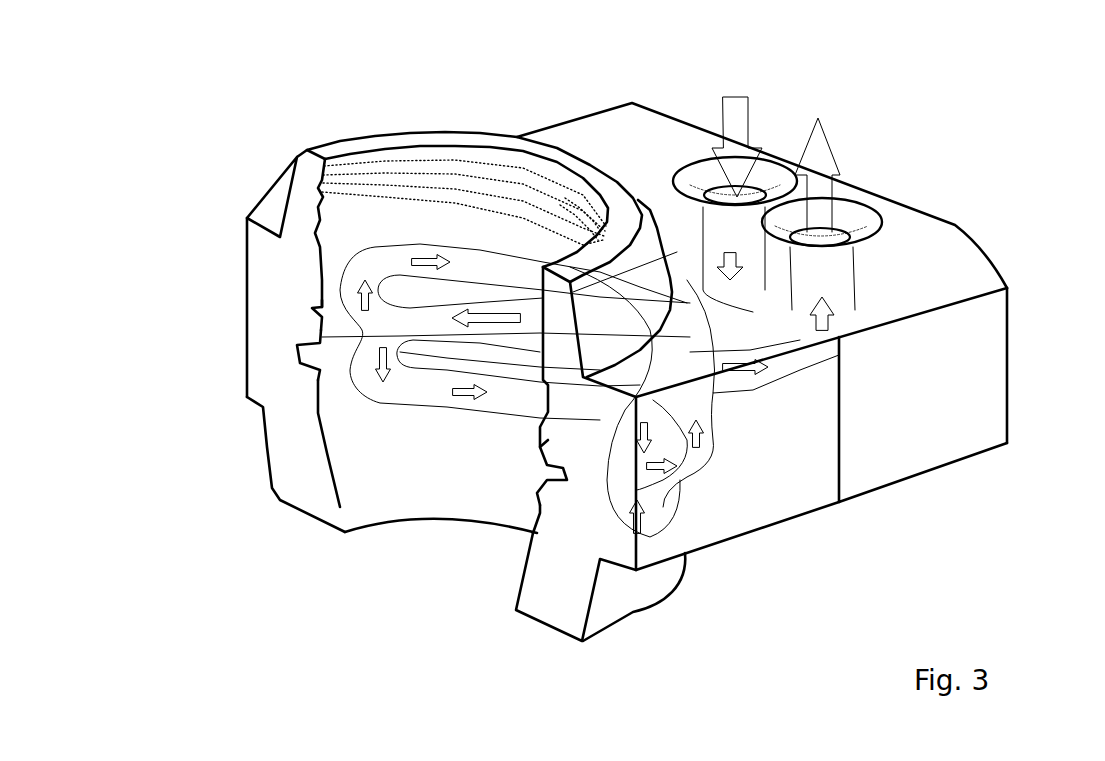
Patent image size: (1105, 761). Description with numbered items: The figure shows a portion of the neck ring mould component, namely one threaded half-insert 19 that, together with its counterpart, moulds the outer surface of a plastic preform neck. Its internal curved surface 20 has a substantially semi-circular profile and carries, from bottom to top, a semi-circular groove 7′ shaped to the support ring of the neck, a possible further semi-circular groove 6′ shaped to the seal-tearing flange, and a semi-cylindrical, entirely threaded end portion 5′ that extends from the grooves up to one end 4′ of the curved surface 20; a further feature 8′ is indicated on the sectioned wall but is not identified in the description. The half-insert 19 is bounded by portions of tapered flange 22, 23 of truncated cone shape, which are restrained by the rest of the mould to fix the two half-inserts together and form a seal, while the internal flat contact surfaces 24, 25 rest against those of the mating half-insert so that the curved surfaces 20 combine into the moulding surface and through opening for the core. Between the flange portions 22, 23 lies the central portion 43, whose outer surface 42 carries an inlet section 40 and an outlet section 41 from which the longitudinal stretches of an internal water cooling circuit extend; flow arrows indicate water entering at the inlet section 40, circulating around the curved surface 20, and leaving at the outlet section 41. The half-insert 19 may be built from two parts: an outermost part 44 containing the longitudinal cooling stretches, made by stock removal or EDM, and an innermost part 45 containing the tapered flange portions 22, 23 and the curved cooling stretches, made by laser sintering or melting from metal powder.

The threaded half-insert 19 is at (668, 76).
The end of the curved surface 4′ is at (468, 140).
The semi-cylindrical threaded end portion 5′ is at (440, 183).
The further semi-circular groove 6′ is at (317, 305).
The semi-circular groove 7′ is at (313, 357).
The lower wall portion 8′ is at (403, 500).
The internal curved surface 20 is at (358, 498).
The portion of tapered flange 22 is at (633, 592).
The portion of tapered flange 23 is at (293, 180).
The internal flat contact surface 24 is at (267, 280).
The internal flat contact surface 25 is at (563, 582).
The inlet section 40 is at (753, 193).
The outlet section 41 is at (840, 232).
The outer surface 42 is at (912, 217).
The central portion 43 is at (1015, 372).
The outermost part 44 is at (973, 442).
The innermost part 45 is at (793, 503).